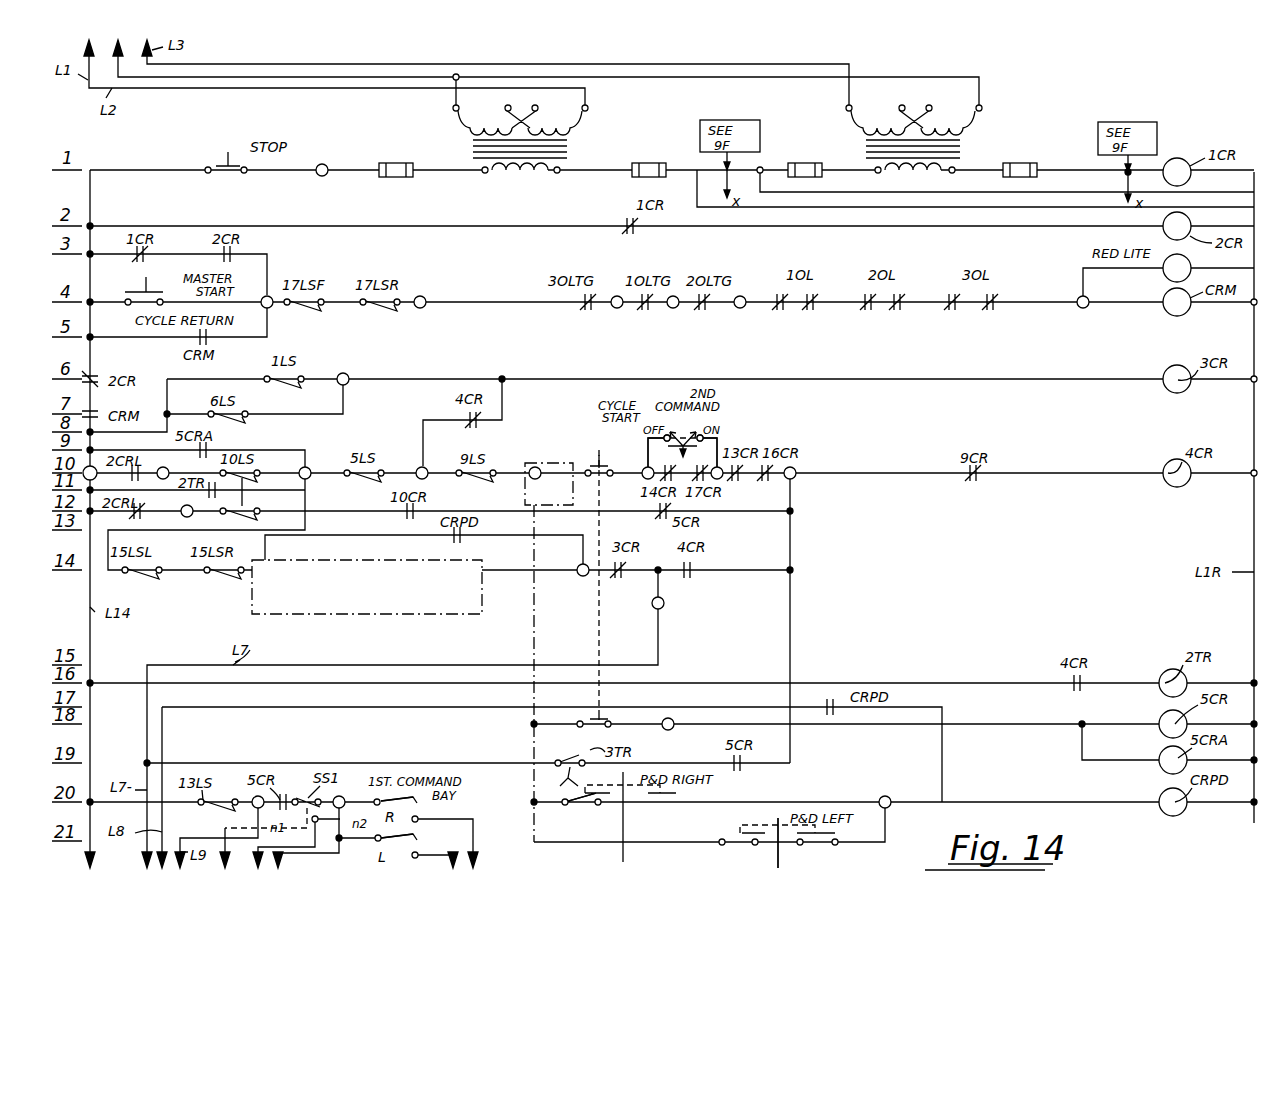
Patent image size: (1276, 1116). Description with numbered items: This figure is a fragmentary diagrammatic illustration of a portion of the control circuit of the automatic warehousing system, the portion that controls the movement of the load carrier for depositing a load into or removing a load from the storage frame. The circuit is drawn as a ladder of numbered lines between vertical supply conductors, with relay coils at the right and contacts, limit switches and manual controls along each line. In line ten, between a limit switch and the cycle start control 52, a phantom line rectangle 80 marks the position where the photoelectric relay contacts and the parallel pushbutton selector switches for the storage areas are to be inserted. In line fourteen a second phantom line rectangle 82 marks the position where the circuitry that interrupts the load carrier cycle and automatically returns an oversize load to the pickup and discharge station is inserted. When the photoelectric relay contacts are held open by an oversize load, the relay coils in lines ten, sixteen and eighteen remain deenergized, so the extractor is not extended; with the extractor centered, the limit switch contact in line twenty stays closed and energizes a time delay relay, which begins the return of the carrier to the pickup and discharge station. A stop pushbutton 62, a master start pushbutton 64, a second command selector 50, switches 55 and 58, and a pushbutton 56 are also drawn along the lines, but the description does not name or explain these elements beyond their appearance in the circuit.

The second command selector switch 50 is at (730, 438).
The cycle start control 52 is at (592, 724).
The switch 55 is at (579, 808).
The P and D left push button 56 is at (822, 842).
The first command bay selector switch 58 is at (410, 840).
The stop push button 62 is at (226, 156).
The master start push button 64 is at (130, 289).
The phantom line rectangle 80 is at (541, 460).
The phantom line rectangle 82 is at (356, 618).